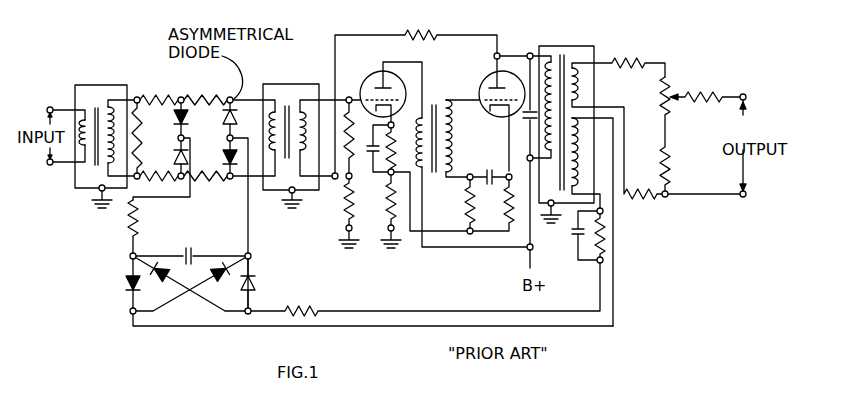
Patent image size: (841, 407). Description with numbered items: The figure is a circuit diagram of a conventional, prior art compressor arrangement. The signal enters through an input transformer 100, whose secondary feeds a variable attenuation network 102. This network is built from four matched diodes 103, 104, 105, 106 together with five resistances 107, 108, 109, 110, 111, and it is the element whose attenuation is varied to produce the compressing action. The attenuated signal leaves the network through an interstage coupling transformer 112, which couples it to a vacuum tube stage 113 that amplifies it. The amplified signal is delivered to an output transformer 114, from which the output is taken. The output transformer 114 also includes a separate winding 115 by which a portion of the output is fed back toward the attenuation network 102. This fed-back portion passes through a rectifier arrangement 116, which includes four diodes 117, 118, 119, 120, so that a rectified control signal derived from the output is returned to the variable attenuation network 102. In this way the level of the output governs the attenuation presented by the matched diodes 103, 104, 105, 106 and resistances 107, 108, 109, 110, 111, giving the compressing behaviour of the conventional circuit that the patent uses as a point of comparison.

The input transformer 100 is at (80, 85).
The variable attenuation network 102 is at (212, 141).
The matched diode 103 is at (168, 128).
The matched diode 104 is at (173, 157).
The matched diode 105 is at (232, 118).
The matched diode 106 is at (236, 162).
The resistance 107 is at (155, 138).
The resistance 108 is at (178, 97).
The resistance 109 is at (195, 98).
The resistance 110 is at (163, 182).
The resistance 111 is at (210, 188).
The interstage coupling transformer 112 is at (297, 90).
The vacuum tube stage 113 is at (460, 68).
The output transformer 114 is at (602, 175).
The winding 115 is at (578, 178).
The rectifier arrangement 116 is at (194, 321).
The diode 117 is at (126, 285).
The diode 118 is at (166, 284).
The diode 119 is at (228, 262).
The diode 120 is at (256, 285).